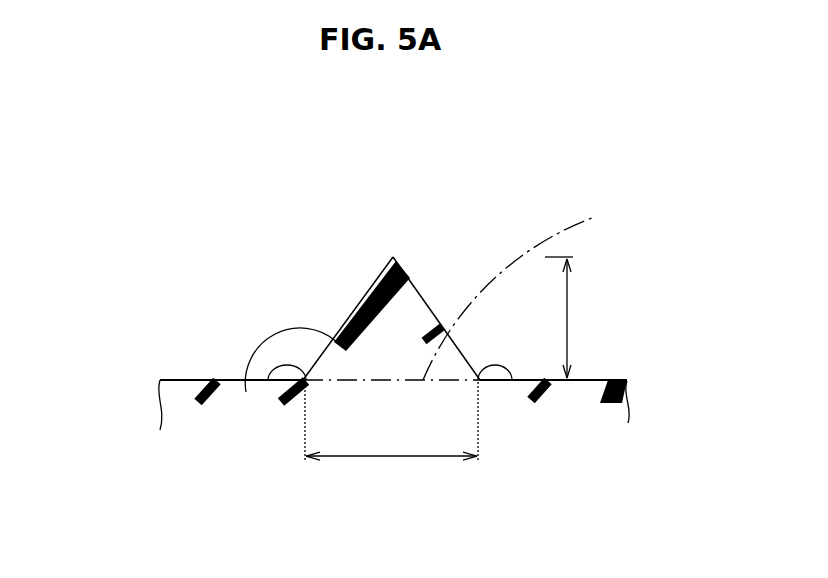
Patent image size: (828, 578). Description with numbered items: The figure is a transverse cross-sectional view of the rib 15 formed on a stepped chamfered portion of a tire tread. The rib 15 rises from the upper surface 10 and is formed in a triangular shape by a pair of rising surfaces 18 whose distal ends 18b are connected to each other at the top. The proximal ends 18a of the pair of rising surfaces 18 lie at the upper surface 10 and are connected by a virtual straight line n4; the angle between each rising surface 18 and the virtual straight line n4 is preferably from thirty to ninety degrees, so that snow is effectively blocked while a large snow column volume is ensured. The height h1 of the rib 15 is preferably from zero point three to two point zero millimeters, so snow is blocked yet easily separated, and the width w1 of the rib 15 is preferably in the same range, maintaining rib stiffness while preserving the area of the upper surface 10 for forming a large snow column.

The upper surface 10 is at (187, 378).
The rib 15 is at (533, 188).
The rising surfaces 18 is at (360, 300).
The proximal ends 18a is at (267, 380).
The distal ends 18b is at (393, 257).
The virtual straight line n4 is at (523, 292).
The height h1 is at (576, 317).
The width w1 is at (391, 437).